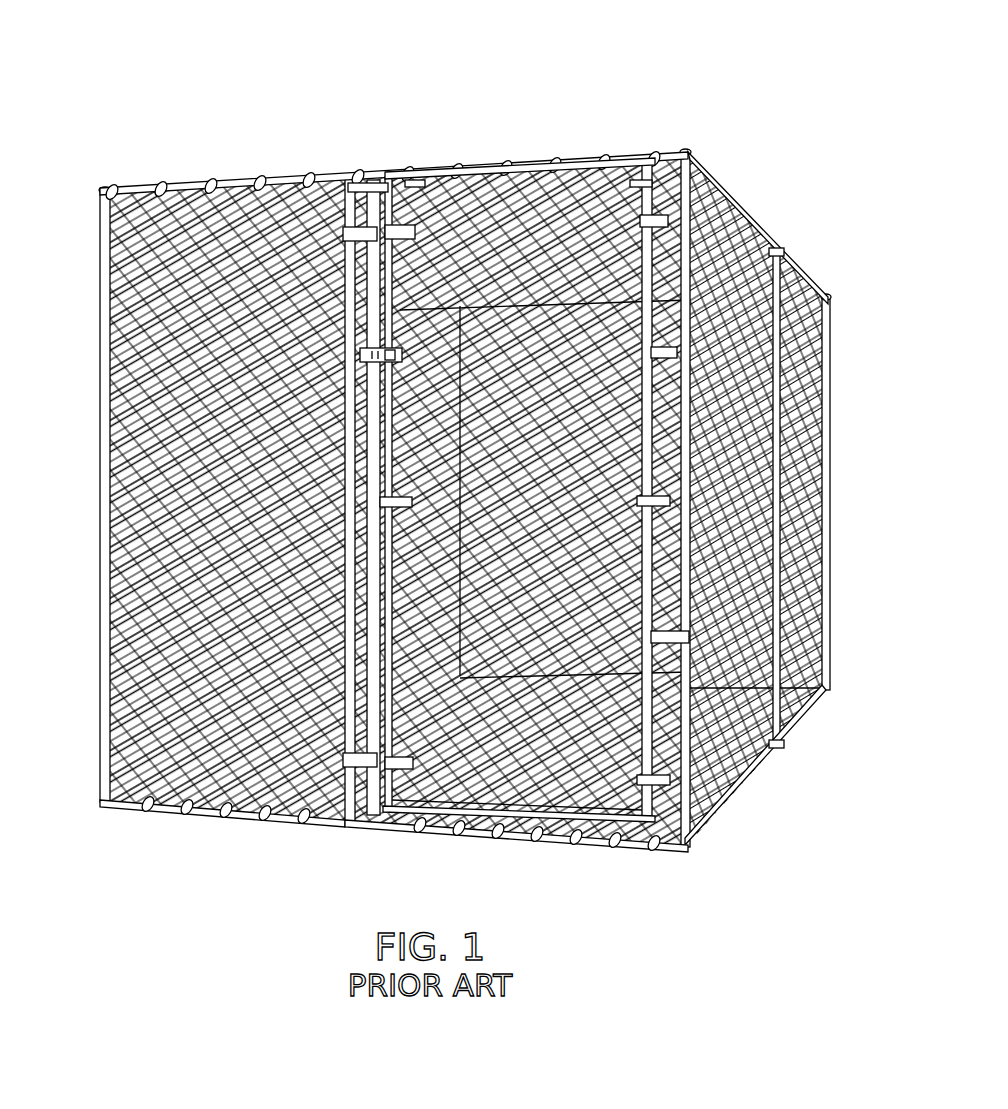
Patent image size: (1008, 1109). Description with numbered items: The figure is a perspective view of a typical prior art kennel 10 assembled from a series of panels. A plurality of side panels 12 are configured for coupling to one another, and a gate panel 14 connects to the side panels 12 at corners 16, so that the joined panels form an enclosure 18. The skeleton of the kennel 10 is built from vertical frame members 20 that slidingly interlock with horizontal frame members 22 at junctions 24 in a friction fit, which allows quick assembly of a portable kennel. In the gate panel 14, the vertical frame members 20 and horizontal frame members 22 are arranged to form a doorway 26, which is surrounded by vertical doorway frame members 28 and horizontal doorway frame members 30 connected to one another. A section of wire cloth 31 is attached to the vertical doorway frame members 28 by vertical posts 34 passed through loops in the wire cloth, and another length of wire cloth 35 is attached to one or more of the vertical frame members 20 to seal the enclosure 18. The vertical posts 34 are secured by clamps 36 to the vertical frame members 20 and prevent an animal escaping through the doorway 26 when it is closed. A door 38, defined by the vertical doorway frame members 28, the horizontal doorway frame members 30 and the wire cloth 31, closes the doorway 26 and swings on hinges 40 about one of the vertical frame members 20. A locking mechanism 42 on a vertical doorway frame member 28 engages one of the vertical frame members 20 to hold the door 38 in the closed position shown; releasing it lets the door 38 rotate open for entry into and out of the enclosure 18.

The kennel 10 is at (106, 84).
The side panels 12 is at (220, 186).
The gate panel 14 is at (250, 816).
The corners 16 is at (128, 187).
The enclosure 18 is at (472, 122).
The vertical frame members 20 is at (352, 240).
The horizontal frame members 22 is at (168, 183).
The junctions 24 is at (346, 172).
The doorway 26 is at (541, 875).
The vertical doorway frame members 28 is at (648, 830).
The horizontal doorway frame members 30 is at (509, 178).
The wire cloth 31 is at (612, 806).
The vertical posts 34 is at (348, 186).
The wire cloth 35 is at (102, 582).
The clamps 36 is at (376, 225).
The door 38 is at (560, 176).
The hinges 40 is at (780, 262).
The locking mechanism 42 is at (392, 346).